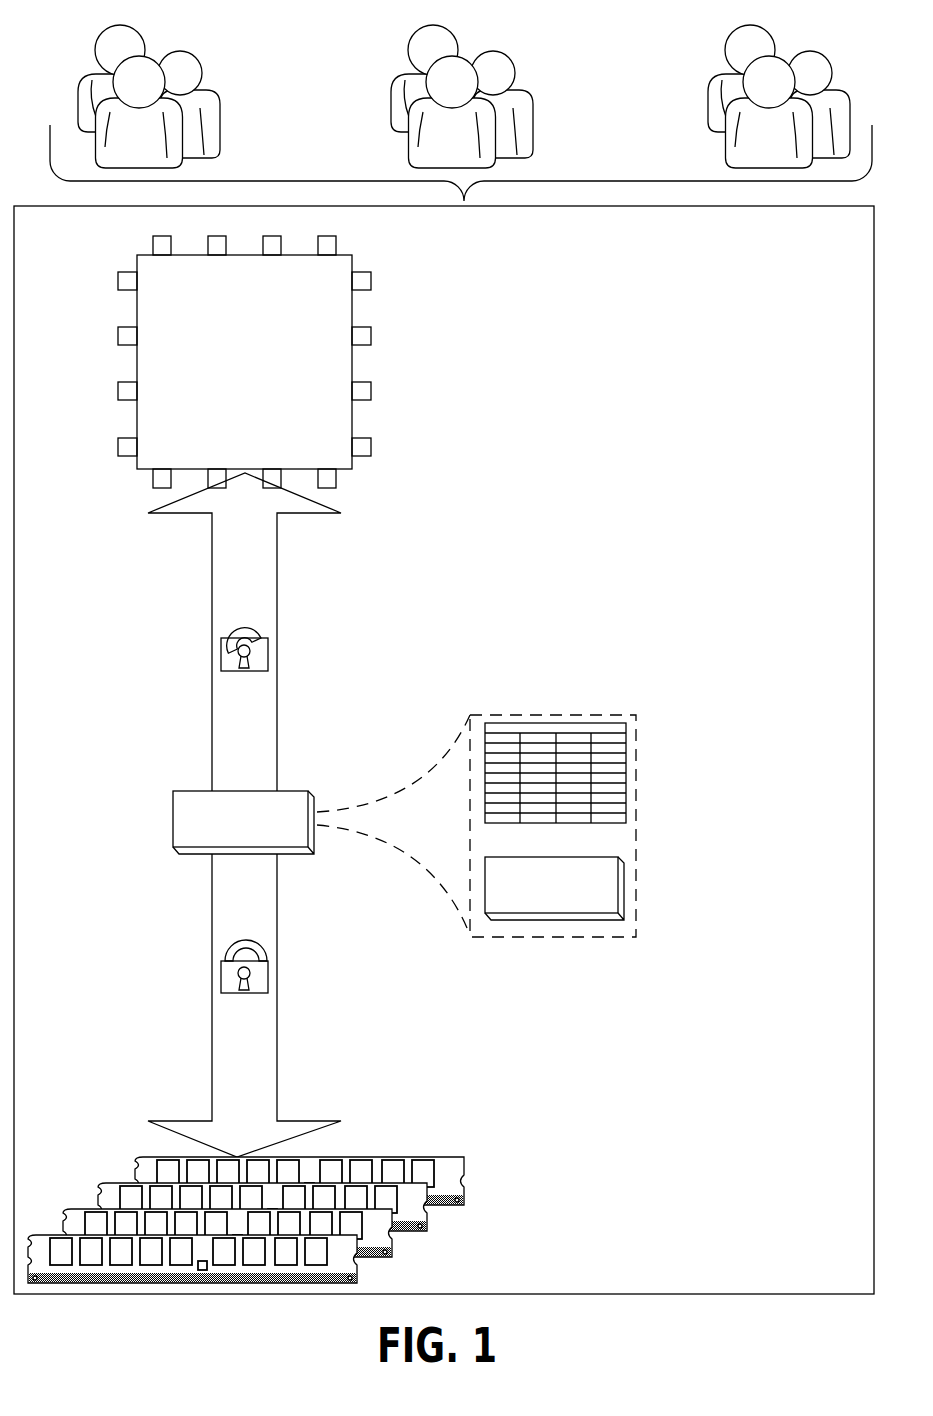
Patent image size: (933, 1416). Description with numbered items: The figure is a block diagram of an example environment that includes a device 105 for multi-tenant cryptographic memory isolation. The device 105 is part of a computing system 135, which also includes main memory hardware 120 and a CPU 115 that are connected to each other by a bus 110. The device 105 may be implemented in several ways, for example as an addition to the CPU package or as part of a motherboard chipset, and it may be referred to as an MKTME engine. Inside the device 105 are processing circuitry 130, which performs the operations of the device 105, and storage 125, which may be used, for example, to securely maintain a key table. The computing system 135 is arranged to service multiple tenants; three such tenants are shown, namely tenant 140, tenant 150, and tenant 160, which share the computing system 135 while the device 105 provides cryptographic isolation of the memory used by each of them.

The device 105 is at (173, 813).
The bus 110 is at (278, 578).
The CPU 115 is at (137, 255).
The main memory hardware 120 is at (462, 1162).
The storage 125 is at (625, 777).
The processing circuitry 130 is at (625, 892).
The computing system 135 is at (663, 1295).
The tenant 140 is at (98, 42).
The tenant 150 is at (411, 42).
The tenant 160 is at (728, 42).